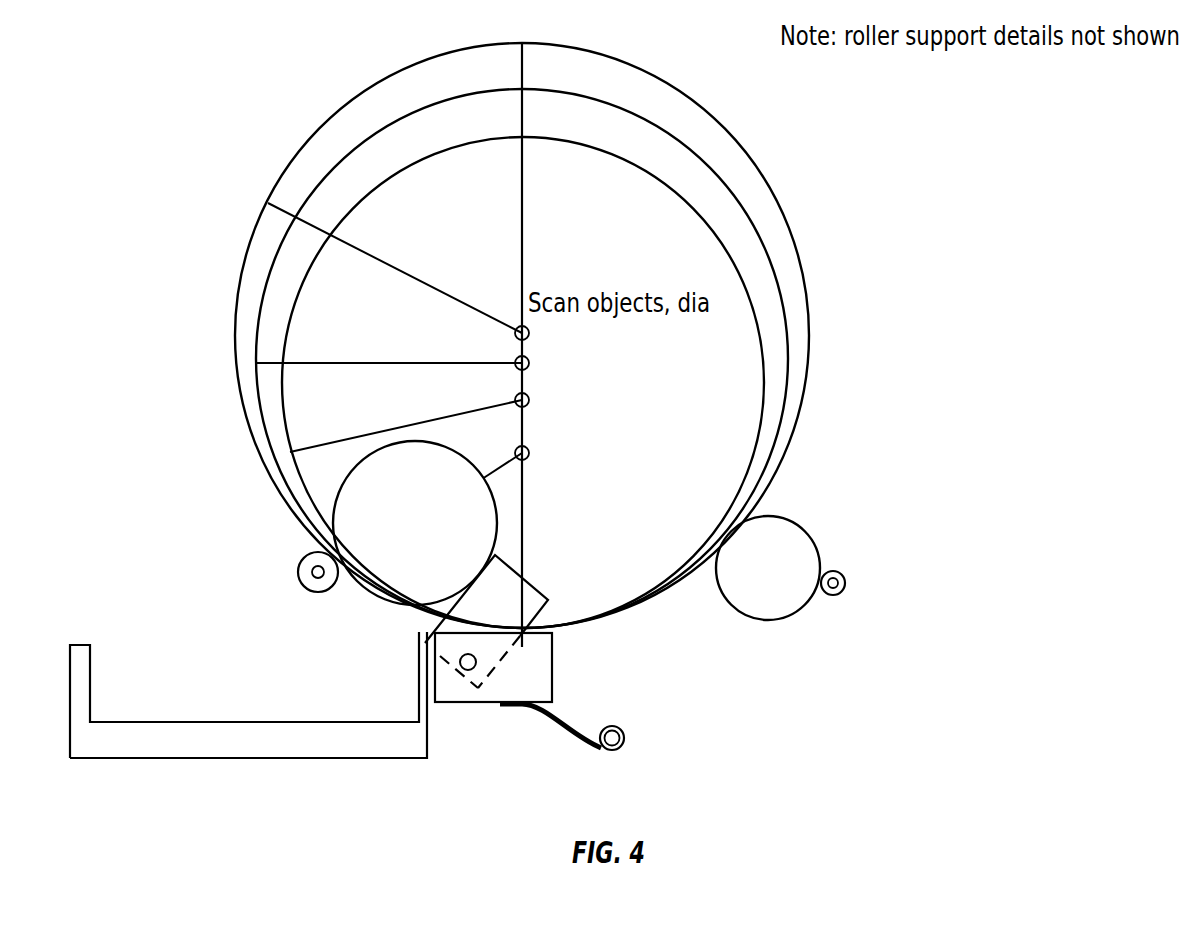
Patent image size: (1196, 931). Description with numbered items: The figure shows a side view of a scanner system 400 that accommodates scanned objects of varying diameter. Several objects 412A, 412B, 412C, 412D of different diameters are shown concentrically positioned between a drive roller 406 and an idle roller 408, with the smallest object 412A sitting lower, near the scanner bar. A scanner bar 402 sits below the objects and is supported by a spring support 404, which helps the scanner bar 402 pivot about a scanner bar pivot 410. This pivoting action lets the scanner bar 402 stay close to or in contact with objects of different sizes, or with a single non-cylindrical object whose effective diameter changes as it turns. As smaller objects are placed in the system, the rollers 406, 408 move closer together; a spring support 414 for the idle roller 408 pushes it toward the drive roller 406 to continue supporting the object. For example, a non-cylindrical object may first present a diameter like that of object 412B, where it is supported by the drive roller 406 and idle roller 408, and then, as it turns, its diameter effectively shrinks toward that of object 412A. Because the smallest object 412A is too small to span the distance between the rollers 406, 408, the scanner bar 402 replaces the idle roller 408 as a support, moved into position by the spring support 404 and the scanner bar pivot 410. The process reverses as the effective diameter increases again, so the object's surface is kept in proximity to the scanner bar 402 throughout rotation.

The scanner system 400 is at (887, 203).
The scanner bar 402 is at (553, 652).
The spring support 404 is at (622, 746).
The drive roller 406 is at (303, 586).
The idle roller 408 is at (767, 622).
The scanner bar pivot 410 is at (461, 661).
The smallest object 412A is at (528, 456).
The object 412B is at (528, 403).
The object 412C is at (528, 366).
The object 412D is at (528, 336).
The spring support for the idle roller 414 is at (842, 568).